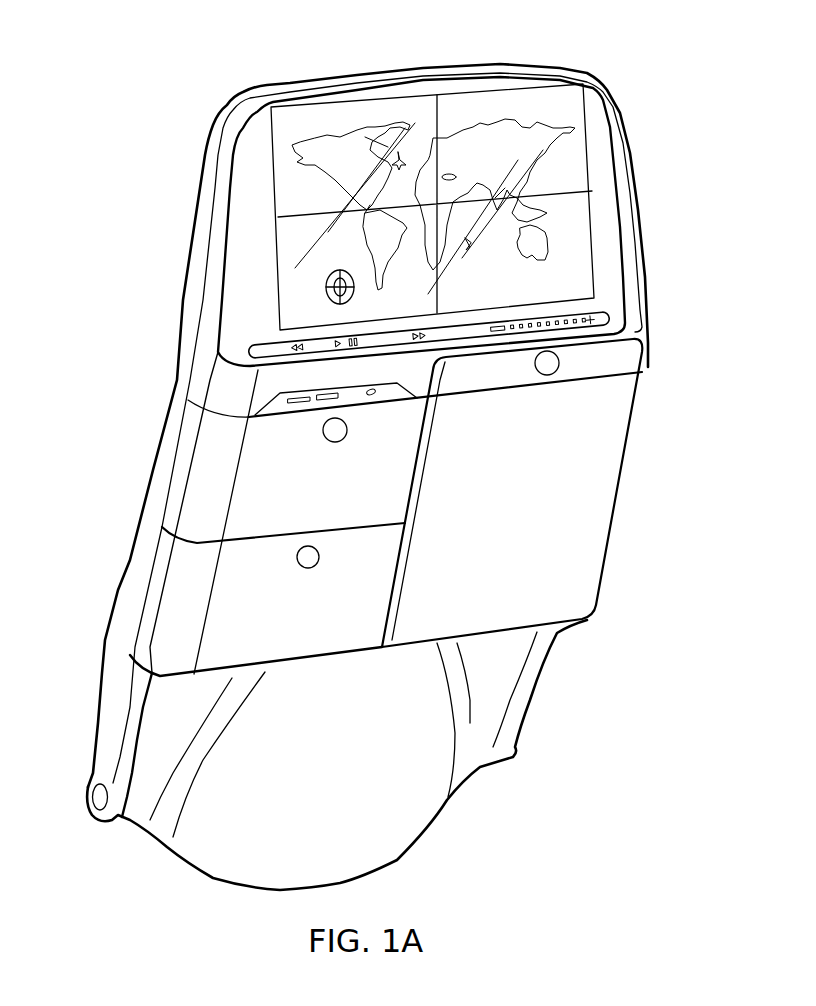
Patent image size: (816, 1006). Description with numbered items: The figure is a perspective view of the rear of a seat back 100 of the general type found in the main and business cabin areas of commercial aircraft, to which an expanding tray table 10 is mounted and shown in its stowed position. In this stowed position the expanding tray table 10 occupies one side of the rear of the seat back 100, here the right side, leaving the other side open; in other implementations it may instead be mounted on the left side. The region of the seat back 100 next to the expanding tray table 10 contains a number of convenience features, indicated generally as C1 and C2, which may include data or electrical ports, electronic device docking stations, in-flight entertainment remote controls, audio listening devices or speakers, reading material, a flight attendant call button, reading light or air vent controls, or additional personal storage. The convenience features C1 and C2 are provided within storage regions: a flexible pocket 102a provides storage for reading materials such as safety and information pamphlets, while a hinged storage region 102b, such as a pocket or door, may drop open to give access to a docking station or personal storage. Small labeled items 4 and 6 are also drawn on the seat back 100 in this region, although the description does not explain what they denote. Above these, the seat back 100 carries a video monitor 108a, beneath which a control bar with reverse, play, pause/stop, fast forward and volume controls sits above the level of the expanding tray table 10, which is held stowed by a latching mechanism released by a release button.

The seat back 100 is at (100, 182).
The expanding tray table 10 is at (107, 380).
The video monitor 108a is at (288, 146).
The control button panel 4 is at (313, 403).
The circular port 6 is at (299, 567).
The flexible pocket 102a is at (385, 520).
The hinged storage region 102b is at (373, 649).
The convenience feature C1 is at (253, 515).
The convenience feature C2 is at (232, 618).